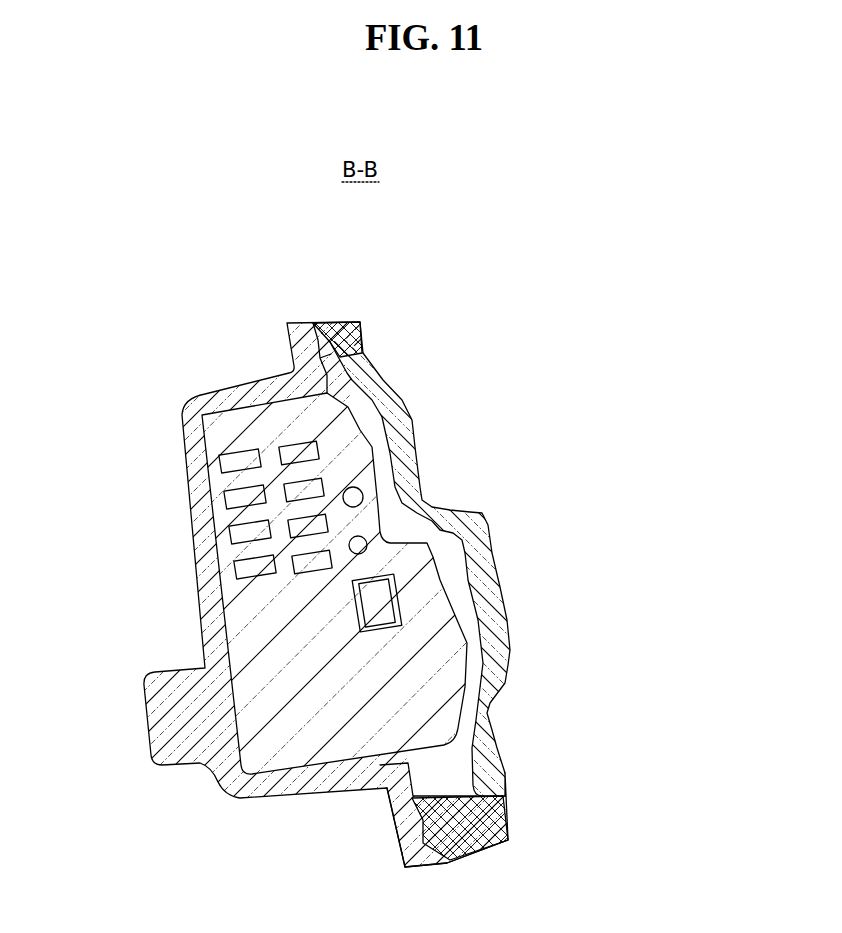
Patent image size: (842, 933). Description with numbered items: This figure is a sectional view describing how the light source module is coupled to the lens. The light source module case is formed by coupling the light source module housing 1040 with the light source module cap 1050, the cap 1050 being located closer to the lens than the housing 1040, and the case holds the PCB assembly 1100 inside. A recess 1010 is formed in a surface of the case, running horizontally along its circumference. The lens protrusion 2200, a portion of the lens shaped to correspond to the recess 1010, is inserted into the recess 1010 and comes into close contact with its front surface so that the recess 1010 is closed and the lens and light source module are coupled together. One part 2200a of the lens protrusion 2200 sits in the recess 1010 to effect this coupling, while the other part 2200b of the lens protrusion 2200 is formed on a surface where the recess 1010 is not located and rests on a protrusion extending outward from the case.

The recess 1010 is at (426, 827).
The light source module housing 1040 is at (203, 552).
The light source module cap 1050 is at (487, 615).
The PCB assembly 1100 is at (353, 460).
The lens protrusion 2200 is at (526, 590).
The part of the lens protrusion 2200a is at (539, 828).
The other part of the lens protrusion 2200b is at (362, 326).